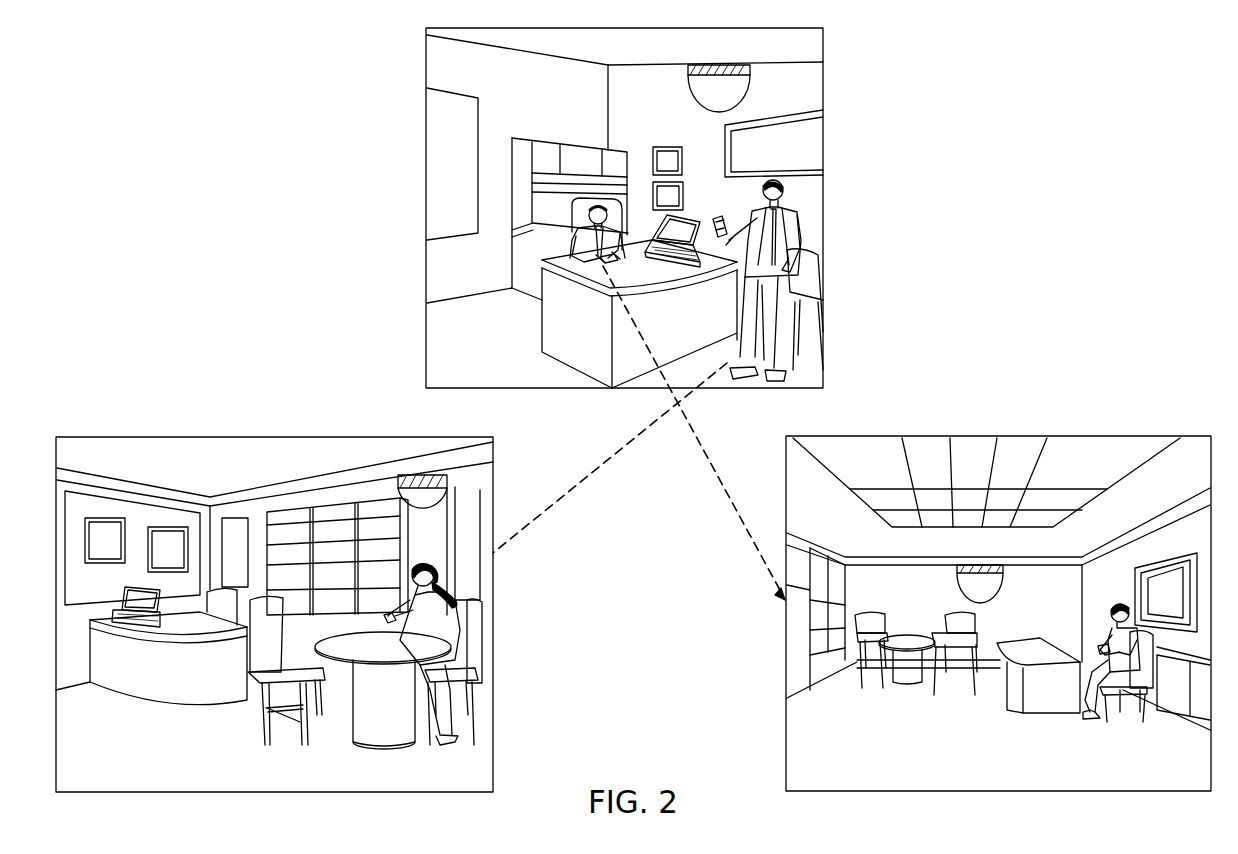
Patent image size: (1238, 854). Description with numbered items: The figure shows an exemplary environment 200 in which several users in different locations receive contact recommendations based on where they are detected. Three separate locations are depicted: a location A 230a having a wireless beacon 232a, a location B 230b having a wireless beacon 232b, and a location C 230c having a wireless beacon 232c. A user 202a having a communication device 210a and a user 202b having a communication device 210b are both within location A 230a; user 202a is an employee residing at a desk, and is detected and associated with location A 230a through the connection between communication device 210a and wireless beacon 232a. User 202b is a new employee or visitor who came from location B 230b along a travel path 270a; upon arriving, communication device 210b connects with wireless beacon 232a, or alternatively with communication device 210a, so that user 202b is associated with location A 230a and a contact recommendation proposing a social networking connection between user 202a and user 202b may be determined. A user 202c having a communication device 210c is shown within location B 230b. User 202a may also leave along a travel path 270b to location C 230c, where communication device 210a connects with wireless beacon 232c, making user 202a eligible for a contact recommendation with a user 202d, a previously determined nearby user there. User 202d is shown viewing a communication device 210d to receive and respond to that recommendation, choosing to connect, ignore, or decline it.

The environment 200 is at (933, 78).
The location A 230a is at (738, 58).
The location B 230b is at (320, 475).
The location C 230c is at (1045, 471).
The wireless beacon 232a is at (698, 93).
The wireless beacon 232b is at (440, 490).
The wireless beacon 232c is at (962, 586).
The user 202a is at (587, 255).
The user 202b is at (790, 227).
The user 202c is at (447, 610).
The user 202d is at (1110, 612).
The communication device 210a is at (620, 262).
The communication device 210b is at (716, 225).
The communication device 210c is at (390, 620).
The communication device 210d is at (1100, 647).
The travel path 270a is at (600, 468).
The travel path 270b is at (745, 530).